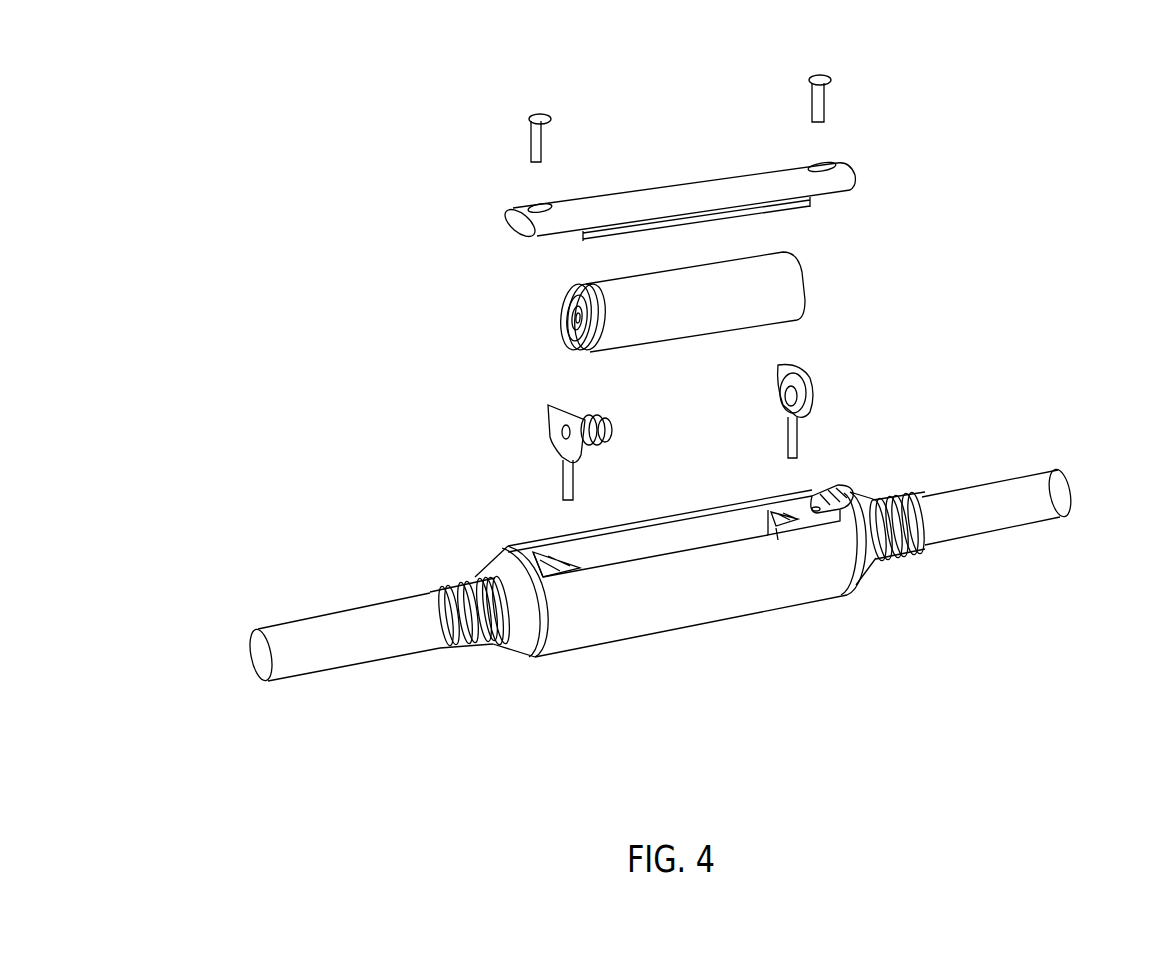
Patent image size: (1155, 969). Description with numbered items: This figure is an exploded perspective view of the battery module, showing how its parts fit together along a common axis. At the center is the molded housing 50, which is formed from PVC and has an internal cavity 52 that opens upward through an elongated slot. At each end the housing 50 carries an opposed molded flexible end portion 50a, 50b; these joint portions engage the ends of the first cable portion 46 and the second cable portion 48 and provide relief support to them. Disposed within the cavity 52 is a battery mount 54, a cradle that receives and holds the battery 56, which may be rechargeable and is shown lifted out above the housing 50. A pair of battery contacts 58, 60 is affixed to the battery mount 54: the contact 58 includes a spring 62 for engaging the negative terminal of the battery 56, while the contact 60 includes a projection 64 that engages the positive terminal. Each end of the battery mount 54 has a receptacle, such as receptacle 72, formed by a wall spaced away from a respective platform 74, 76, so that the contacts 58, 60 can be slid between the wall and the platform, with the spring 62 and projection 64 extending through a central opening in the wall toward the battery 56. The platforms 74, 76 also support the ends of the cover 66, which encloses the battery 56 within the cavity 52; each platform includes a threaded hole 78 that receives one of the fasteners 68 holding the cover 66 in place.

The first cable portion 46 is at (283, 615).
The second cable portion 48 is at (1062, 518).
The housing 50 is at (838, 593).
The flexible end portion 50a is at (475, 630).
The flexible end portion 50b is at (910, 552).
The internal cavity 52 is at (703, 535).
The battery mount 54 is at (754, 508).
The battery 56 is at (806, 288).
The battery contact 58 is at (550, 446).
The battery contact 60 is at (812, 398).
The spring 62 is at (610, 419).
The projection 64 is at (780, 395).
The cover 66 is at (698, 192).
The fasteners 68 is at (528, 143).
The receptacle 72 is at (778, 528).
The platform 74 is at (566, 540).
The platform 76 is at (830, 495).
The threaded hole 78 is at (537, 544).